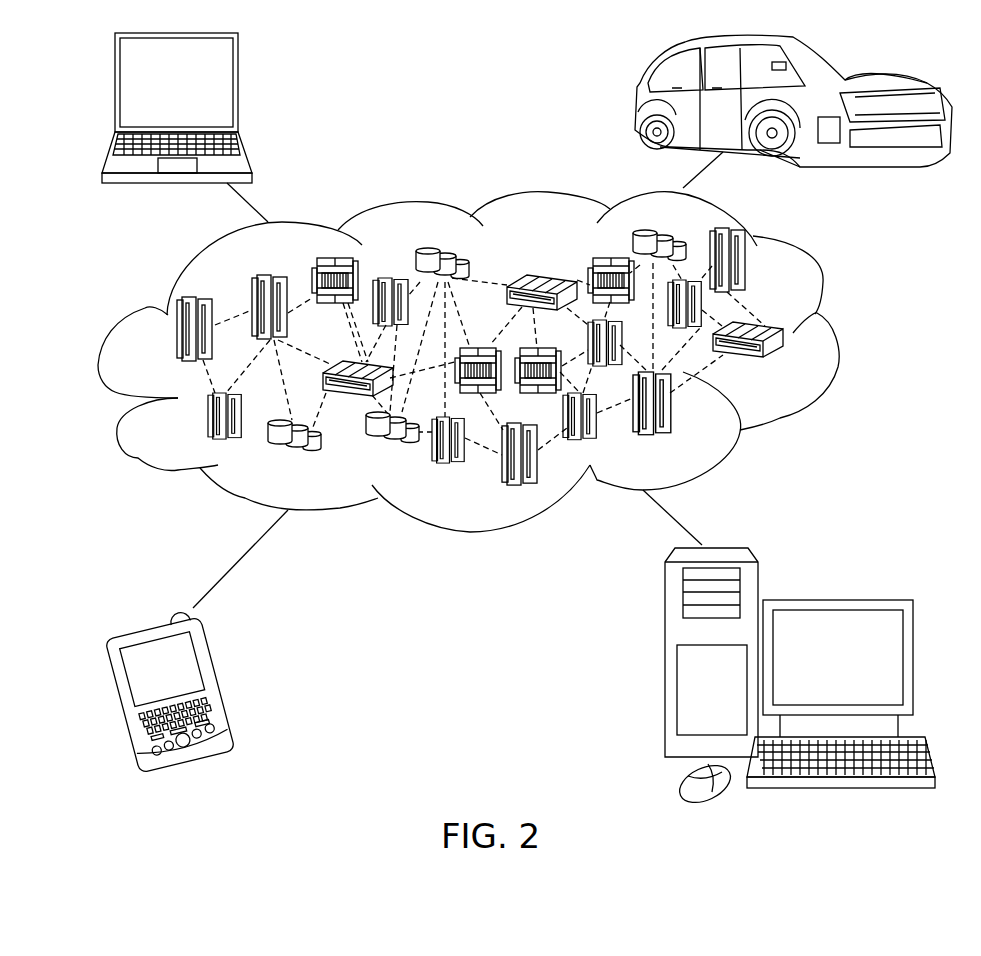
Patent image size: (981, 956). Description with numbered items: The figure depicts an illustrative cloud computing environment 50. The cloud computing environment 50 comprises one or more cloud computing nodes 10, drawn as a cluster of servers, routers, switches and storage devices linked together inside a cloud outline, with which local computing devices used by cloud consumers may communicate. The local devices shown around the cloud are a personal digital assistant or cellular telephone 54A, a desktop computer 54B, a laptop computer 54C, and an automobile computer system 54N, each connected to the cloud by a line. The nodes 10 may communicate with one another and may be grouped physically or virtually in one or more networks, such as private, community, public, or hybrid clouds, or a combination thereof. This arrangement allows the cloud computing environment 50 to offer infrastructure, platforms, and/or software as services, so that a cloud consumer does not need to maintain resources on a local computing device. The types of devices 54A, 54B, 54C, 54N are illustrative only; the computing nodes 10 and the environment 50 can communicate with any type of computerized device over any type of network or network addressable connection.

The cloud computing nodes 10 is at (524, 356).
The cloud computing environment 50 is at (838, 338).
The personal digital assistant or cellular telephone 54A is at (233, 687).
The desktop computer 54B is at (837, 600).
The laptop computer 54C is at (240, 88).
The automobile computer system 54N is at (637, 100).